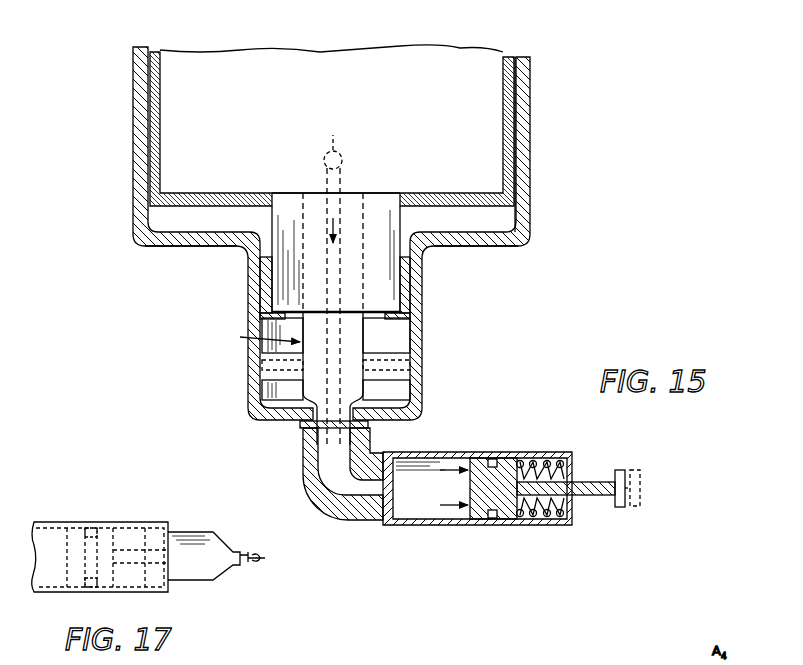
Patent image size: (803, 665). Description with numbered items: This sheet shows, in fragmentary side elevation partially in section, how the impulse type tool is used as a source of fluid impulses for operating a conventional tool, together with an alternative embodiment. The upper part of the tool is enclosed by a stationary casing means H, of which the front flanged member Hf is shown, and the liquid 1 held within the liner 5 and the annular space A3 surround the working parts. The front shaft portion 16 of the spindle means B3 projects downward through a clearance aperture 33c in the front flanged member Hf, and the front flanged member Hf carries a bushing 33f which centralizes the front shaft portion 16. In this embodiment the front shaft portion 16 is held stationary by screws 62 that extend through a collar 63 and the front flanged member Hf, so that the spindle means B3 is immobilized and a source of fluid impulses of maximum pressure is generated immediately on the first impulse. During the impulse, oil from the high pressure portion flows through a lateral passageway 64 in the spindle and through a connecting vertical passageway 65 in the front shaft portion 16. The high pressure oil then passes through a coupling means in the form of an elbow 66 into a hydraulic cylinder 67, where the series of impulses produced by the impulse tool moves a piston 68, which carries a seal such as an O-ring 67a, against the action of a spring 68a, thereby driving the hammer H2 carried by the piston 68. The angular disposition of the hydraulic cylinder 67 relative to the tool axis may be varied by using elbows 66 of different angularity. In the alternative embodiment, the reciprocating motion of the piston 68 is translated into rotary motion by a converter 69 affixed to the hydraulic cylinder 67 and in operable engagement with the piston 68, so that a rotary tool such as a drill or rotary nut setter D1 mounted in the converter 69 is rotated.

In FIG. 15, the stationary casing means H is at (133, 132).
In FIG. 15, the liquid 1 is at (485, 63).
In FIG. 15, the liner 5 is at (510, 70).
In FIG. 15, the annular space A3 is at (520, 80).
In FIG. 15, the front flanged member Hf is at (195, 240).
In FIG. 15, the front shaft portion 16 is at (348, 343).
In FIG. 15, the bushing 33f is at (263, 275).
In FIG. 15, the lateral passageway 64 is at (333, 142).
In FIG. 15, the vertical passageway 65 is at (342, 184).
In FIG. 15, the spindle means B3 is at (257, 337).
In FIG. 15, the screws 62 is at (258, 368).
In FIG. 15, the collar 63 is at (420, 390).
In FIG. 15, the clearance aperture 33c is at (310, 416).
In FIG. 15, the elbow 66 is at (349, 506).
In FIG. 15, the hydraulic cylinder 67 is at (473, 448).
In FIG. 17, the hydraulic cylinder 67 is at (53, 522).
In FIG. 15, the O-ring 67a is at (493, 462).
In FIG. 17, the O-ring 67a is at (90, 524).
In FIG. 15, the piston 68 is at (477, 512).
In FIG. 17, the piston 68 is at (145, 522).
In FIG. 15, the spring 68a is at (553, 462).
In FIG. 15, the hammer H2 is at (622, 478).
In FIG. 17, the converter 69 is at (192, 535).
In FIG. 17, the rotary nut setter D1 is at (256, 563).